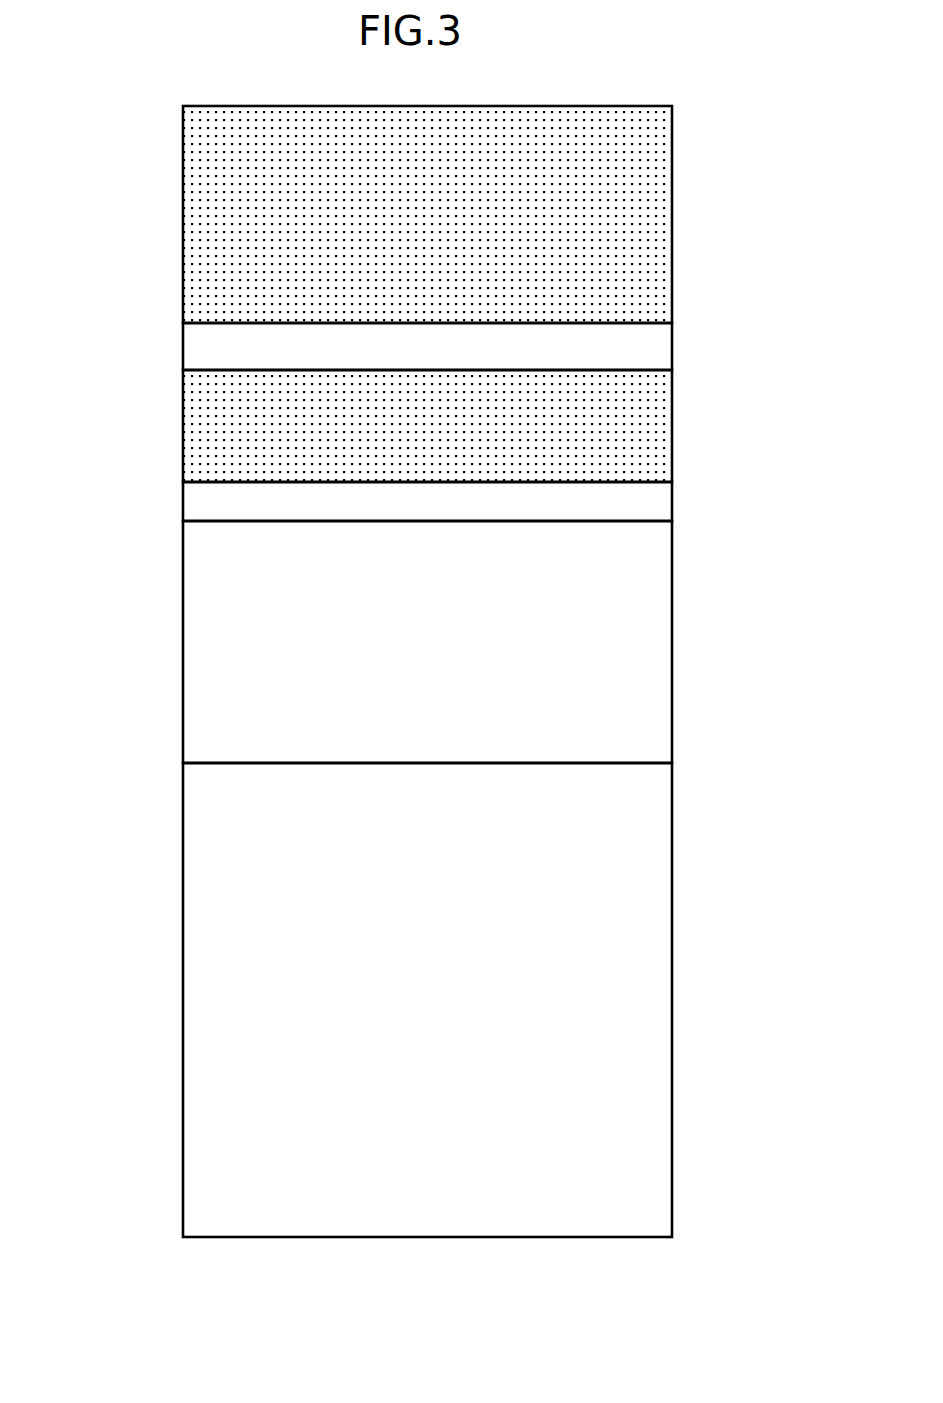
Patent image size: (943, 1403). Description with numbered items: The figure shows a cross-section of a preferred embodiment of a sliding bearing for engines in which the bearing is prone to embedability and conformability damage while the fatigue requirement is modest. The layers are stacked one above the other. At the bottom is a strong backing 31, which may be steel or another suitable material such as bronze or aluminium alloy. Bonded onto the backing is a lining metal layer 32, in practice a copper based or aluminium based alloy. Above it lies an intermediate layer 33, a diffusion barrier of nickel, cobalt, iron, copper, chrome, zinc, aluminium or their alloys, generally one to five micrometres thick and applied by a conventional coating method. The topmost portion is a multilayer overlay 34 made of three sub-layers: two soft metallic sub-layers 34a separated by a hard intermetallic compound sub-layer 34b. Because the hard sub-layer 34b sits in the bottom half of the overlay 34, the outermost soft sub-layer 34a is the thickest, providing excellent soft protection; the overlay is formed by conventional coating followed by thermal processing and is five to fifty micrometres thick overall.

The backing 31 is at (672, 995).
The lining metal layer 32 is at (672, 648).
The intermediate layer 33 is at (672, 500).
The overlay layer 34 is at (417, 294).
The soft metallic sub-layer 34a is at (672, 220).
The hard intermetallic compound sub-layer 34b is at (672, 344).